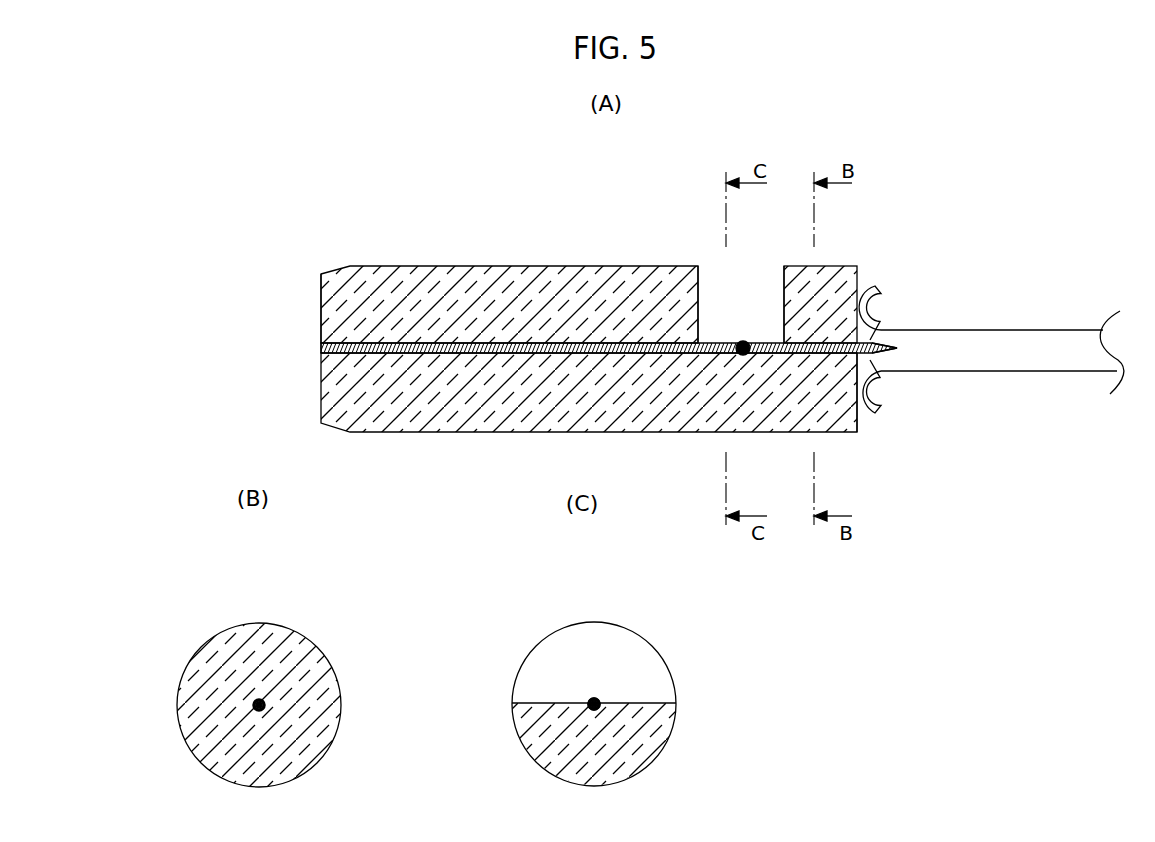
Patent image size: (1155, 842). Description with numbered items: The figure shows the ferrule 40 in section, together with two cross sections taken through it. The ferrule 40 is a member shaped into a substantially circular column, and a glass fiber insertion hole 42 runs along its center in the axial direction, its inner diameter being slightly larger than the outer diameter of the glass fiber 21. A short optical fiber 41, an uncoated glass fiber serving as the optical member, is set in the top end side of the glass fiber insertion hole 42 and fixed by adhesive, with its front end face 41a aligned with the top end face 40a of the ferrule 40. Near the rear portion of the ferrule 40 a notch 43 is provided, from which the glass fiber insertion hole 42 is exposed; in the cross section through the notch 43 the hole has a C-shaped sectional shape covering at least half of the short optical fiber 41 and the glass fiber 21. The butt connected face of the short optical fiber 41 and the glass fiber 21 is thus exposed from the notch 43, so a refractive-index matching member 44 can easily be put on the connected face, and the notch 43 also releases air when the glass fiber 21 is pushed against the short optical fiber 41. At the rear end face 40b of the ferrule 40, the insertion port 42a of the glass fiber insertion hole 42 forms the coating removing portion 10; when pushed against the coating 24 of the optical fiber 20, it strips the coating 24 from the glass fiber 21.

The coating removing portion 10 is at (879, 428).
The optical fiber 20 is at (995, 338).
The glass fiber 21 is at (813, 343).
The coating 24 is at (882, 400).
The ferrule 40 is at (528, 218).
The top end face of the ferrule 40a is at (320, 302).
The rear end face of the ferrule 40b is at (858, 435).
The short optical fiber 41 is at (438, 343).
The front end face of the short optical fiber 41a is at (320, 348).
The glass fiber insertion hole 42 is at (256, 699).
The insertion port 42a is at (864, 346).
The notch 43 is at (715, 293).
The refractive-index matching member 44 is at (742, 341).